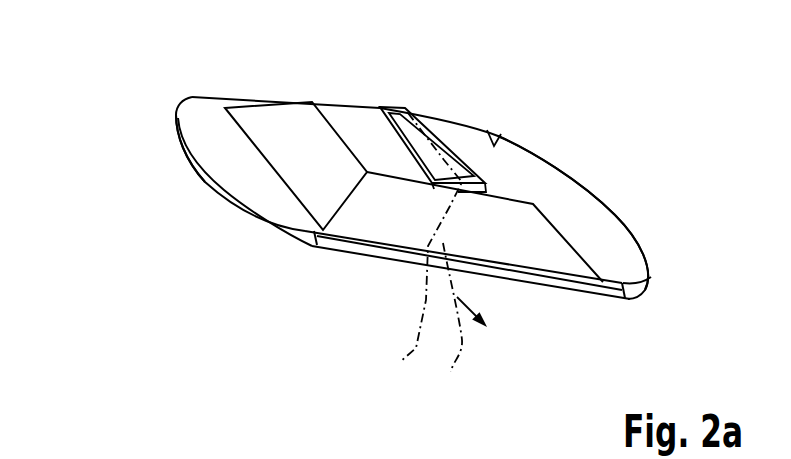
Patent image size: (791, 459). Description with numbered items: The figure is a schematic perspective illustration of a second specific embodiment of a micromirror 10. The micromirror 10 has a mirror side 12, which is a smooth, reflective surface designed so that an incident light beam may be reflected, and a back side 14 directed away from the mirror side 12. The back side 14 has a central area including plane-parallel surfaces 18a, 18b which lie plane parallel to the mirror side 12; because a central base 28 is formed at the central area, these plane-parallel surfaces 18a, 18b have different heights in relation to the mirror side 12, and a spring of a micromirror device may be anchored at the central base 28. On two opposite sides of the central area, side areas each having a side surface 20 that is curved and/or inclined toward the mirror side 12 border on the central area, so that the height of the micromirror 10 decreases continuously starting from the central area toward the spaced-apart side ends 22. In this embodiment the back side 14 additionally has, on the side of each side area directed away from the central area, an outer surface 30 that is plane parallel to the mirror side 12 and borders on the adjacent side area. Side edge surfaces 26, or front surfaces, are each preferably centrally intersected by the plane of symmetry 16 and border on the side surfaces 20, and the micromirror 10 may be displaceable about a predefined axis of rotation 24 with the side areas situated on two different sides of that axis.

The micromirror 10 is at (362, 217).
The mirror side 12 is at (283, 249).
The back side 14 is at (527, 152).
The plane of symmetry 16 is at (422, 252).
The plane-parallel surface 18a is at (442, 110).
The plane-parallel surface 18b is at (369, 114).
The side surface 20 is at (262, 126).
The side end 22 is at (173, 163).
The axis of rotation 24 is at (460, 323).
The side edge surface 26 is at (540, 252).
The central base 28 is at (395, 107).
The outer surface 30 is at (227, 121).